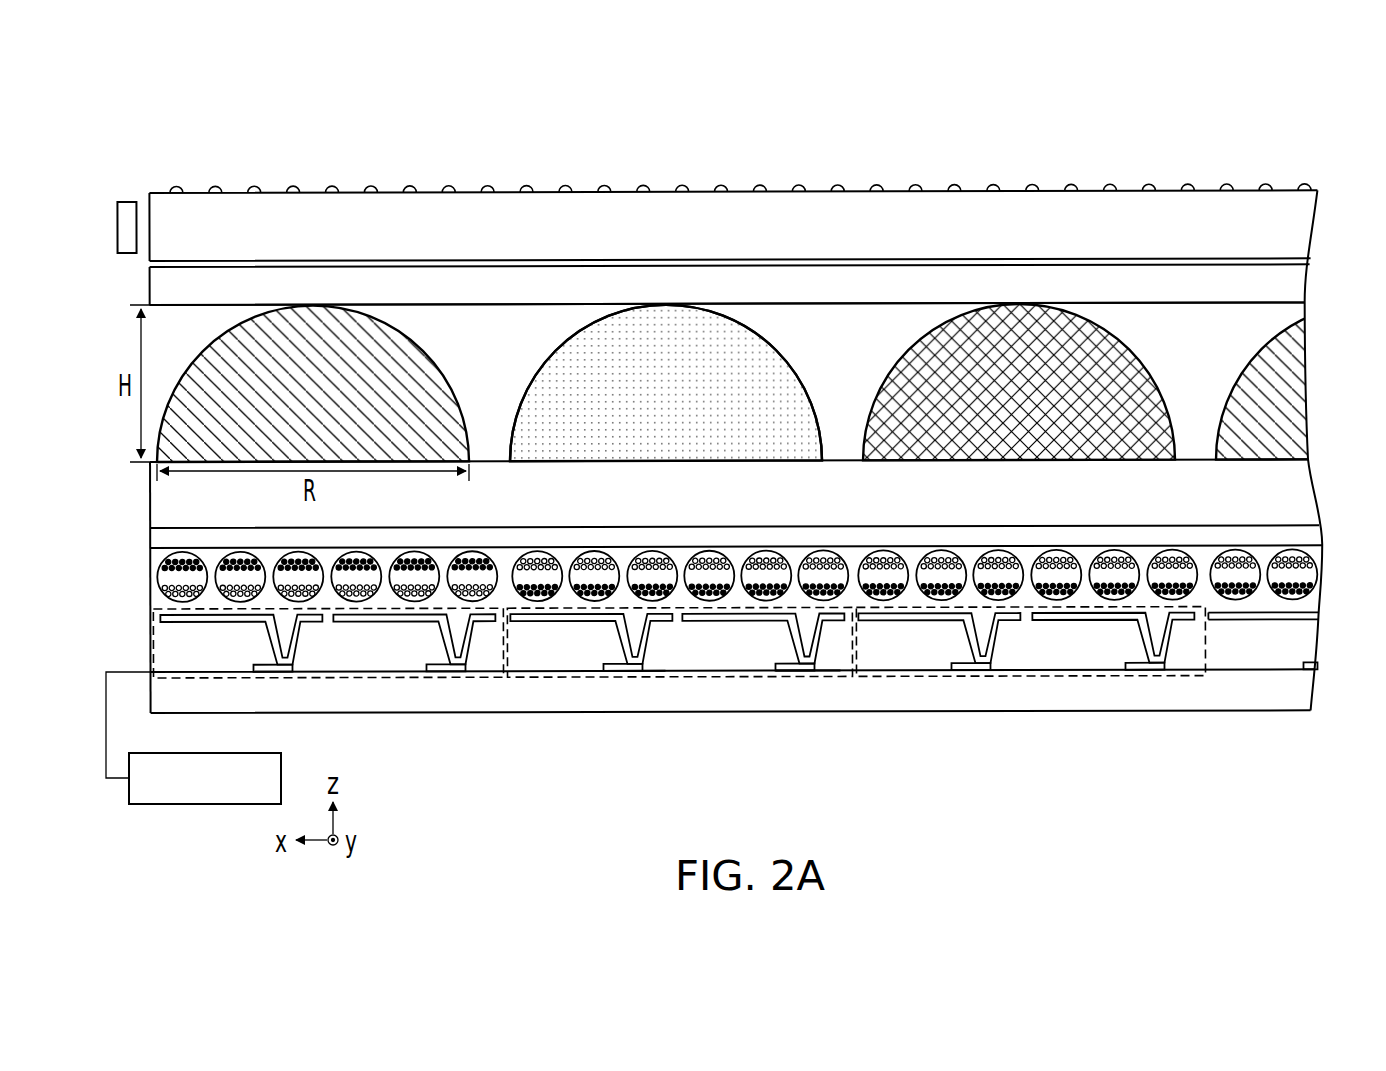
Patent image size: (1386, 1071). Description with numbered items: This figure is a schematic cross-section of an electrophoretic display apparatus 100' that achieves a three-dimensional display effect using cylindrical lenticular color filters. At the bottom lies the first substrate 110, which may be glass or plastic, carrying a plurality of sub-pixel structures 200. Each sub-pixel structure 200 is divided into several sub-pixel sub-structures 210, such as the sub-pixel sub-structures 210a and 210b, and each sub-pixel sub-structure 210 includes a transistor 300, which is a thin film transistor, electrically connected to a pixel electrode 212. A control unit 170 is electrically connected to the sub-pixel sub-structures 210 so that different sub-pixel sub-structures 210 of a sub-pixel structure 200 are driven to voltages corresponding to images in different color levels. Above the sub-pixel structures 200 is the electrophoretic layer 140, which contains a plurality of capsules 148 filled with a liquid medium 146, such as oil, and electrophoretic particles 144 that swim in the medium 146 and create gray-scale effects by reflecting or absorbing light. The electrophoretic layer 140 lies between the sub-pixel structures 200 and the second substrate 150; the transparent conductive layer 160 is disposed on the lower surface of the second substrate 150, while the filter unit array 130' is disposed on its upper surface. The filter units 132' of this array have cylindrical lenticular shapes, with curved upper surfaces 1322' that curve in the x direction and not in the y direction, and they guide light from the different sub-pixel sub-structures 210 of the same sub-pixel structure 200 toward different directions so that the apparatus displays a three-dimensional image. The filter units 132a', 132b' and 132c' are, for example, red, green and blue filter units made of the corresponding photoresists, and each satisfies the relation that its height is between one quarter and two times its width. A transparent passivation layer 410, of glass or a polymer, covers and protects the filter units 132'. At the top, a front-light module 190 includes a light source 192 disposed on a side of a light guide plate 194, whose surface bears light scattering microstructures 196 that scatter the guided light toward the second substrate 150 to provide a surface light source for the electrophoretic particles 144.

The electrophoretic display apparatus 100' is at (735, 460).
The first substrate 110 is at (1308, 688).
The filter unit array 130' is at (771, 289).
The filter units 132' is at (771, 289).
The red filter unit 132a' is at (771, 289).
The green filter unit 132b' is at (666, 289).
The blue filter unit 132c' is at (1019, 288).
The upper surface of filter unit 1322' is at (666, 289).
The electrophoretic layer 140 is at (763, 656).
The electrophoretic particles 144 is at (712, 585).
The medium 146 is at (595, 578).
The capsules 148 is at (564, 585).
The second substrate 150 is at (1307, 493).
The transparent conductive layer 160 is at (1312, 546).
The control unit 170 is at (207, 805).
The front-light module 190 is at (701, 184).
The light source 192 is at (126, 253).
The light guide plate 194 is at (170, 210).
The light scattering microstructures 196 is at (178, 187).
The sub-pixel structures 200 is at (679, 685).
The sub-pixel sub-structures 210 is at (743, 732).
The sub-pixel sub-structure 210a is at (807, 687).
The sub-pixel sub-structure 210b is at (633, 687).
The pixel electrode 212 is at (758, 618).
The transistor 300 is at (787, 670).
The passivation layer 410 is at (893, 347).